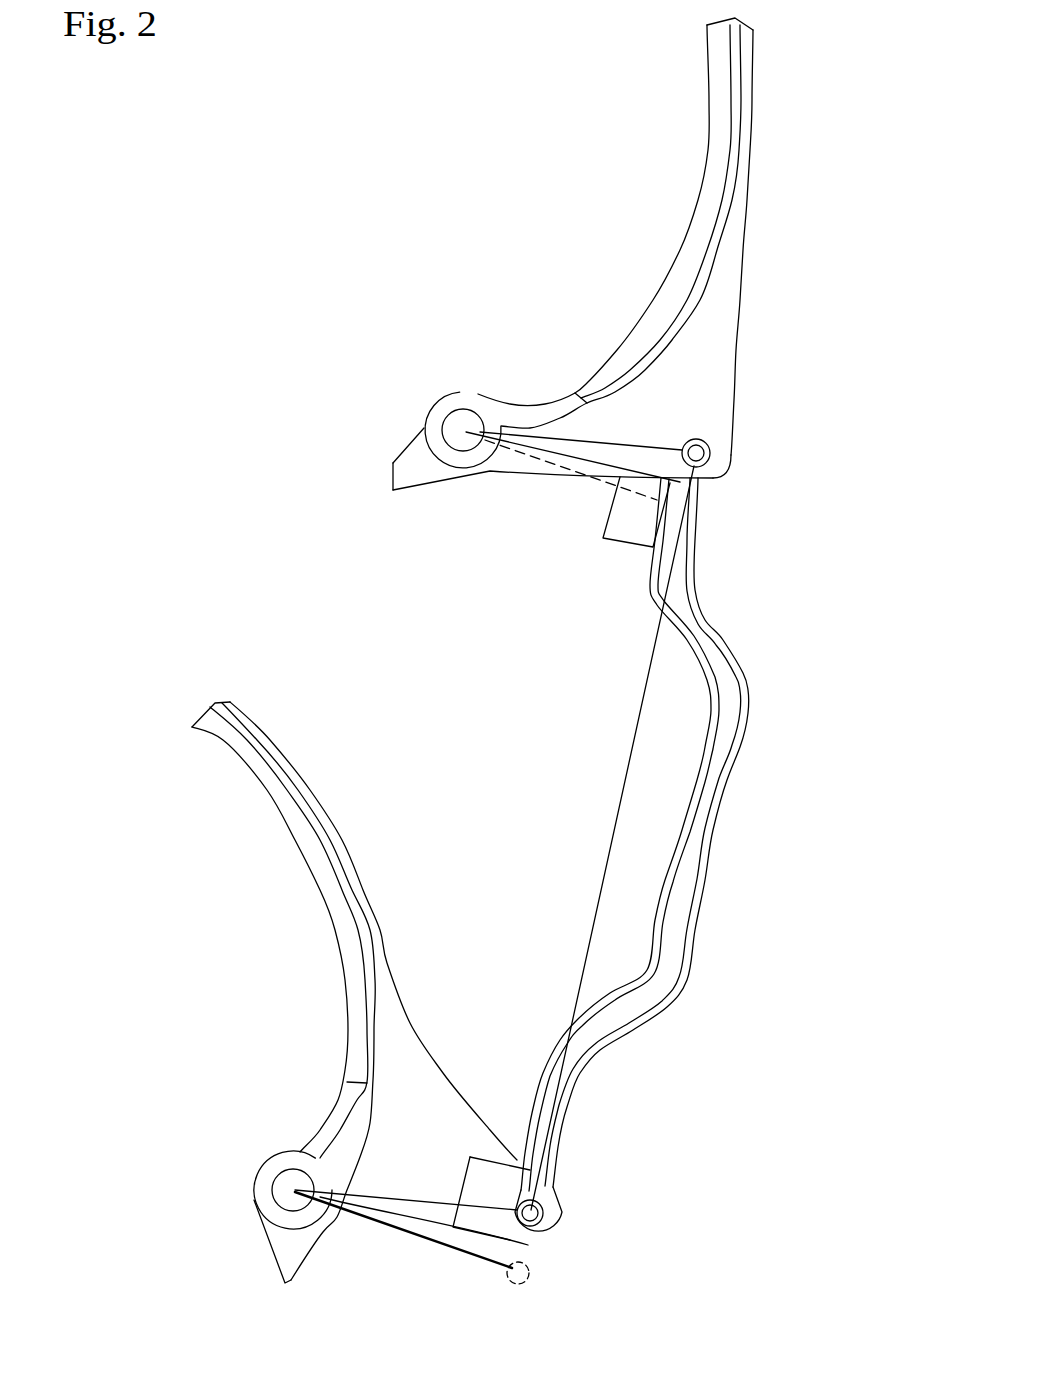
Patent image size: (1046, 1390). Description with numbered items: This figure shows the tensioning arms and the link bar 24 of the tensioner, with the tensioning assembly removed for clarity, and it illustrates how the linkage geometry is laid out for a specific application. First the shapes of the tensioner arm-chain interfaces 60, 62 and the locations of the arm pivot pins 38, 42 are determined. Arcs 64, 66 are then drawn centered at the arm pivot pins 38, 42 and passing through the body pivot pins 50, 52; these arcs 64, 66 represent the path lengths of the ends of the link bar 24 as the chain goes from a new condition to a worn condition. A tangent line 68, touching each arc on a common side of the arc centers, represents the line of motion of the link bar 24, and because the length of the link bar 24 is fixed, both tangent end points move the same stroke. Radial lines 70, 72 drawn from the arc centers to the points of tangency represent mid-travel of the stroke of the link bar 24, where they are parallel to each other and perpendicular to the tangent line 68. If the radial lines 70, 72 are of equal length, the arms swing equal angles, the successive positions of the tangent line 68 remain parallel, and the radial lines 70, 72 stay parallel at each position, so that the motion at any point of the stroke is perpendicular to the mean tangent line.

The link bar 24 is at (693, 858).
The arm pivot pin 38 is at (293, 1190).
The arm pivot pin 42 is at (463, 430).
The body pivot pin 50 is at (547, 1212).
The body pivot pin 52 is at (712, 444).
The tensioner arm-chain interface 60 is at (362, 913).
The tensioner arm-chain interface 62 is at (677, 323).
The arc 64 is at (523, 1253).
The arc 66 is at (723, 472).
The tangent line 68 is at (613, 837).
The radial line 70 is at (417, 1220).
The radial line 72 is at (593, 460).